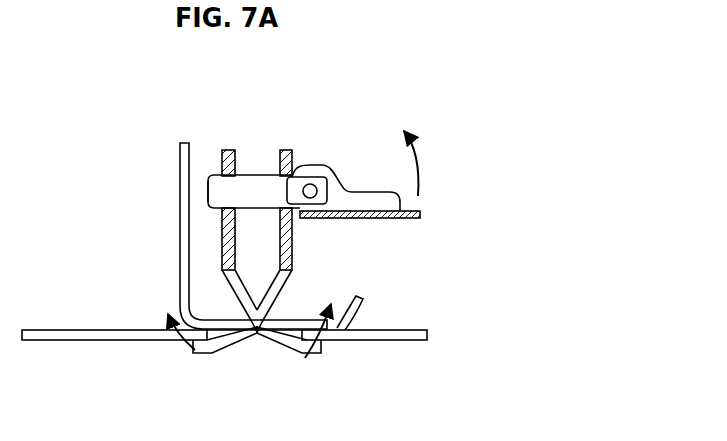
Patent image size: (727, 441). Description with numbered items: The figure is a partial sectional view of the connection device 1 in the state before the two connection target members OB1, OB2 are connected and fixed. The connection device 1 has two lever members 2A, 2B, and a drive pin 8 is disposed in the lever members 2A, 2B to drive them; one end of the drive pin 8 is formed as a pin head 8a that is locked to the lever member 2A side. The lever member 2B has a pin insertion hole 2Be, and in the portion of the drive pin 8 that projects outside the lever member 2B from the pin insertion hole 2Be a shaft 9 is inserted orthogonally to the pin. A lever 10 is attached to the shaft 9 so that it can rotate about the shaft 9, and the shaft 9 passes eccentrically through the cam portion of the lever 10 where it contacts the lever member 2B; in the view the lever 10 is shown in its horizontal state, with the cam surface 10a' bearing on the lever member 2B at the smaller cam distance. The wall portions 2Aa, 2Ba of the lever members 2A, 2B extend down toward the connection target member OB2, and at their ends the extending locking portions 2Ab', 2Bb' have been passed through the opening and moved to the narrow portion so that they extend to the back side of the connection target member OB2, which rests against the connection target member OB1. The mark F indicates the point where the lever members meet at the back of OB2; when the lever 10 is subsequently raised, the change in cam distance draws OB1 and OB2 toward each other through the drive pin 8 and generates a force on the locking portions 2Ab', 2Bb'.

The connection device 1 is at (168, 111).
The lever member 2A is at (232, 148).
The lever member 2B is at (288, 148).
The first leg wall portion 2Aa is at (221, 239).
The second leg wall portion 2Ba is at (292, 240).
The locking portion 2Ab' is at (212, 366).
The locking portion 2Bb' is at (310, 357).
The pin insertion hole 2Be is at (300, 173).
The drive pin 8 is at (258, 180).
The pin head 8a is at (207, 187).
The shaft 9 is at (313, 197).
The lever 10 is at (378, 210).
The lever portion 10a' is at (346, 177).
The connection target member OB1 is at (179, 272).
The connection target member OB2 is at (57, 329).
The force point F is at (253, 334).